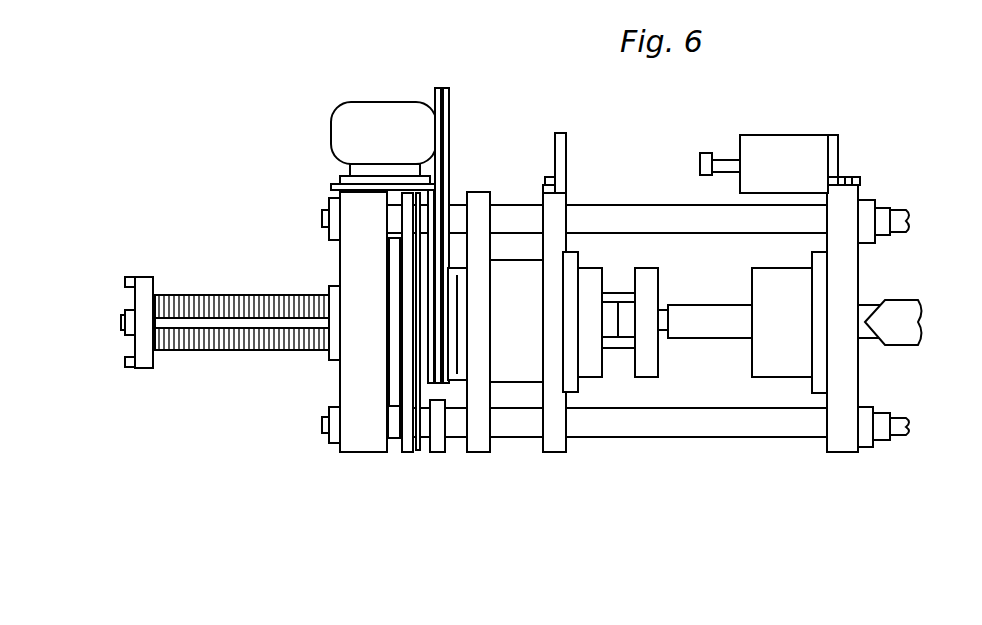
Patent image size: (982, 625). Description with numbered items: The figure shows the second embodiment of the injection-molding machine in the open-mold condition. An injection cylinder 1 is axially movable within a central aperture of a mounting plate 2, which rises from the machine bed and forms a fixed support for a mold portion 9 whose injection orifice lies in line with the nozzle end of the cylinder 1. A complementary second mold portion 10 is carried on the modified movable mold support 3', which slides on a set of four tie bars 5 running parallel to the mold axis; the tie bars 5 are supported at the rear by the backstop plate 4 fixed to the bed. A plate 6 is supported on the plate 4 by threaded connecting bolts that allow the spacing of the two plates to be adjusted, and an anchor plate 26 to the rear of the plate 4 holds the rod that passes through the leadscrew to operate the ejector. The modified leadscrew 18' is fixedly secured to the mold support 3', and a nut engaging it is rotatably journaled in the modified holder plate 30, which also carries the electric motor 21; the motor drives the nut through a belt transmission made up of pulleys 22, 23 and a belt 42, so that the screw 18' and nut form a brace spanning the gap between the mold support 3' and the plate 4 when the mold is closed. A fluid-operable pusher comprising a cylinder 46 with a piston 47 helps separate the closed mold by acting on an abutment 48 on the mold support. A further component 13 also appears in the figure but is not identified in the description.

The injection cylinder 1 is at (905, 322).
The mounting plate 2 is at (845, 388).
The modified mold support 3' is at (553, 339).
The backstop plate 4 is at (355, 432).
The tie bars 5 is at (813, 425).
The plate 6 is at (689, 322).
The mold portion 9 is at (775, 360).
The second mold portion 10 is at (590, 358).
The plate 13 is at (405, 440).
The modified leadscrew 18' is at (247, 343).
The electric motor 21 is at (373, 116).
The pulley 22 is at (448, 106).
The pulley 23 is at (445, 268).
The anchor plate 26 is at (143, 352).
The modified holder plate 30 is at (425, 432).
The belt 42 is at (443, 188).
The cylinder 46 is at (792, 140).
The piston 47 is at (705, 150).
The abutment 48 is at (567, 145).